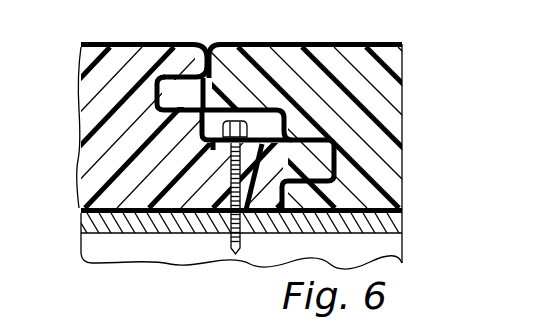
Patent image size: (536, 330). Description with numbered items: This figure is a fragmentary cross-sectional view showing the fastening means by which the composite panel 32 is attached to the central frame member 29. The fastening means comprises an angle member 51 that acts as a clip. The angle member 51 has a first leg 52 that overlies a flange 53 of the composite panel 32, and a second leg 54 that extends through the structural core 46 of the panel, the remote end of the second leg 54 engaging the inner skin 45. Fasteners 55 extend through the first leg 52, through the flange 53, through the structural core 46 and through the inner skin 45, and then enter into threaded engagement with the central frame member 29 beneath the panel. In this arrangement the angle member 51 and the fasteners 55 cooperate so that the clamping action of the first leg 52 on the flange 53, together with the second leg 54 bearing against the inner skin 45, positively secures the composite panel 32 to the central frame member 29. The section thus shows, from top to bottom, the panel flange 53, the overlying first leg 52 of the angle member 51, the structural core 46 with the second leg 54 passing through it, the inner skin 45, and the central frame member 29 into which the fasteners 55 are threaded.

The composite panel 32 is at (177, 38).
The first leg 52 is at (268, 134).
The angle member 51 is at (275, 131).
The second leg 54 is at (337, 162).
The flange 53 is at (215, 127).
The structural core 46 is at (94, 139).
The inner skin 45 is at (103, 205).
The central frame member 29 is at (182, 228).
The fasteners 55 is at (231, 250).